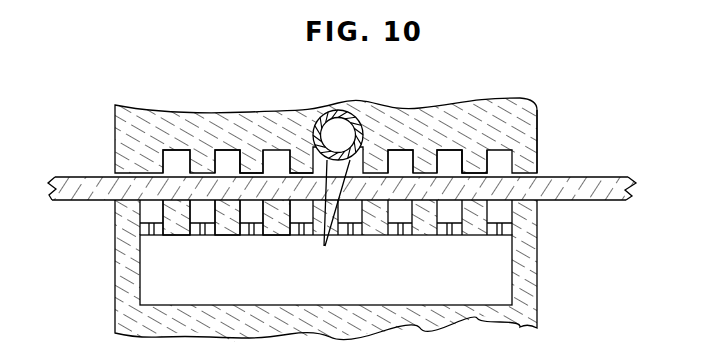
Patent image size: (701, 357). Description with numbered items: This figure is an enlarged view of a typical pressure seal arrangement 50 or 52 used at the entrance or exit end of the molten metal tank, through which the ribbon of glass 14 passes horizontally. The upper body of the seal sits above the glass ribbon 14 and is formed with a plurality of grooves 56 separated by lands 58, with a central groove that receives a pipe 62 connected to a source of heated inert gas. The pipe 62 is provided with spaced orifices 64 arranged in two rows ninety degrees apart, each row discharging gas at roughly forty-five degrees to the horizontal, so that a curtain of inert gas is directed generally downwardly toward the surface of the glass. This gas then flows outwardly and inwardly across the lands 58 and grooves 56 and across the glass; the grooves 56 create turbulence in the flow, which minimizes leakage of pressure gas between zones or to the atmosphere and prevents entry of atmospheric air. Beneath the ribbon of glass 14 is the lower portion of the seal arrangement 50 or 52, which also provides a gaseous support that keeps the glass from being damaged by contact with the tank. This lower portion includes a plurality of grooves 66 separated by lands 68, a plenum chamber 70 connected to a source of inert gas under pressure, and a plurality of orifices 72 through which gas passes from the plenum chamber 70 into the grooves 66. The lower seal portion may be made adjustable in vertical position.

The ribbon of glass 14 is at (73, 177).
The pressure seal arrangement 50 is at (541, 121).
The pressure seal arrangement 52 is at (549, 123).
The grooves 56 is at (227, 151).
The lands 58 is at (292, 171).
The pipe 62 is at (335, 111).
The orifices 64 is at (331, 213).
The grooves 66 is at (190, 216).
The lands 68 is at (275, 208).
The plenum chamber 70 is at (326, 271).
The orifices 72 is at (448, 237).